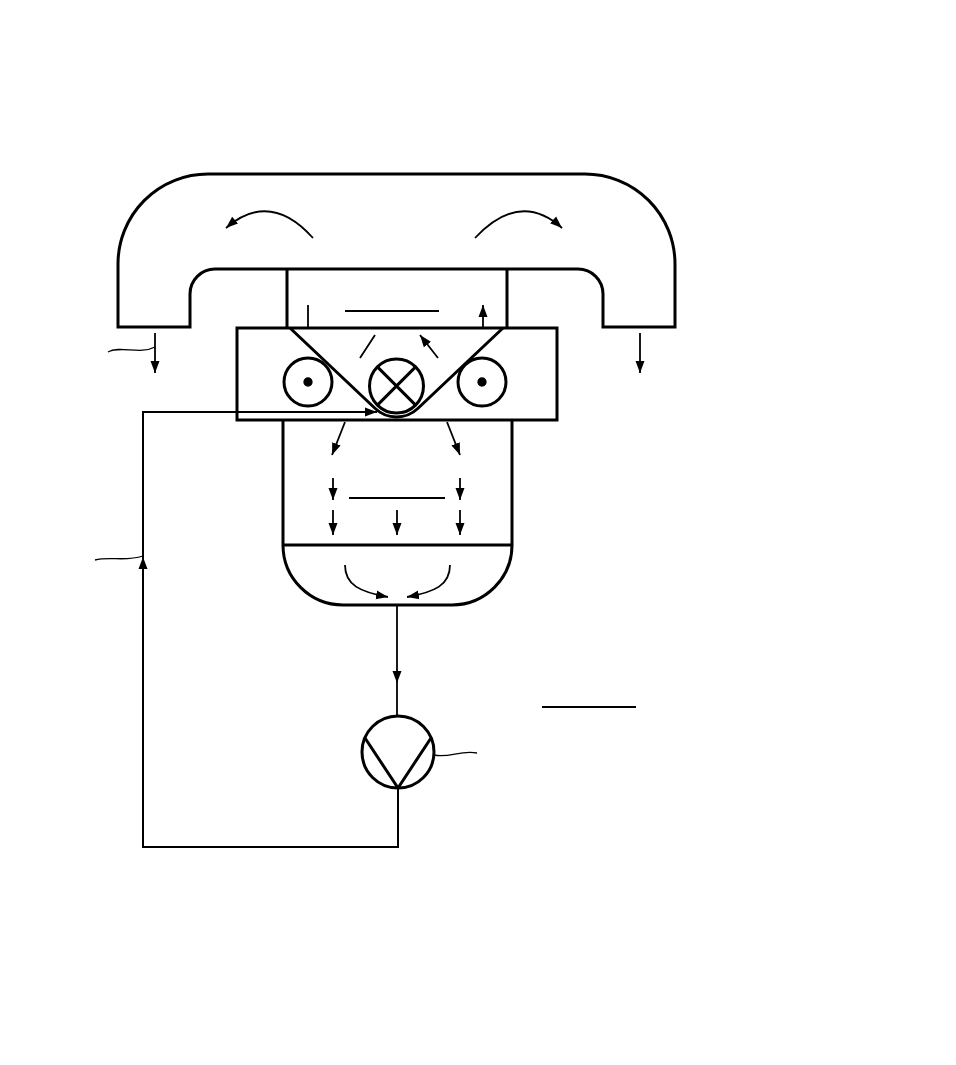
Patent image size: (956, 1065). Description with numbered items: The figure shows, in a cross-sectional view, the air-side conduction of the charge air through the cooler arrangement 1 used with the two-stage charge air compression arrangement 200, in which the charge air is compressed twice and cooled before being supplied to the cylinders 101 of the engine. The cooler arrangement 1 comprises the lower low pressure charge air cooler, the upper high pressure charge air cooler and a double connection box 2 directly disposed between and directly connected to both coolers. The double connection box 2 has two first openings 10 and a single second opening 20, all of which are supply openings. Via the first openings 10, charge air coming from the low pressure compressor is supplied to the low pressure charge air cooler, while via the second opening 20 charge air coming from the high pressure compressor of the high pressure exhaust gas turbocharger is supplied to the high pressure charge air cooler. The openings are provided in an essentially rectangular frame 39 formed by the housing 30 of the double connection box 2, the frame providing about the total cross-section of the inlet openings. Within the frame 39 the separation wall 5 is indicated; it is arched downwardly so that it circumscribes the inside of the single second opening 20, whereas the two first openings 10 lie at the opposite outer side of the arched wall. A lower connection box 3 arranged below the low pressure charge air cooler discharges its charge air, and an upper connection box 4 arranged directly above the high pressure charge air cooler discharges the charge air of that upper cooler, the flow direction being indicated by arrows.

The charge air compression arrangement 200 is at (572, 115).
The cooler arrangement 1 is at (132, 198).
The upper connection box 4 is at (472, 173).
The cylinders 101 is at (172, 406).
The double connection box 2 is at (248, 432).
The housing 30 is at (563, 424).
The rectangular frame 39 is at (236, 421).
The first openings 10 is at (285, 373).
The separation wall 5 is at (445, 380).
The second opening 20 is at (440, 388).
The lower connection box 3 is at (505, 590).